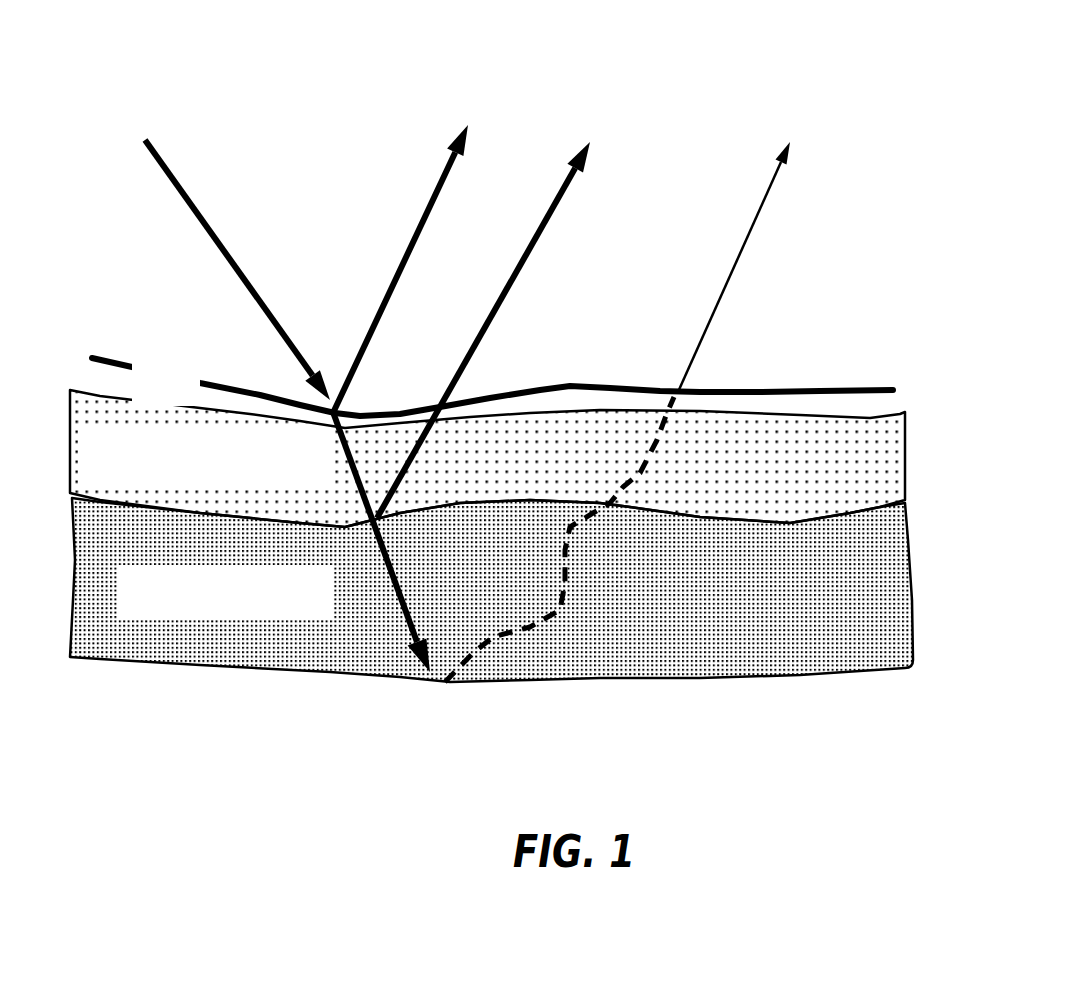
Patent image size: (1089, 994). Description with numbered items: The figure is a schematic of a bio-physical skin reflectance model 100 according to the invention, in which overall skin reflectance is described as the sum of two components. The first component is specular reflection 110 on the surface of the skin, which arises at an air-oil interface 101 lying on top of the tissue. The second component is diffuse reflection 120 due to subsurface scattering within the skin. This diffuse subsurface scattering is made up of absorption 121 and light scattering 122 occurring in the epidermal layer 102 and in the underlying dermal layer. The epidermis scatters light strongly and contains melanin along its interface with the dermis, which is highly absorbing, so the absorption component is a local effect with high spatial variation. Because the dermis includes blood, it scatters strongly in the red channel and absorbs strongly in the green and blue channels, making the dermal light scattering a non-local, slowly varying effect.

The skin tissue sample with oil layer 100 is at (551, 473).
The air-oil interface 101 is at (893, 392).
The epidermal layer 102 is at (898, 497).
The specular reflection 110 is at (483, 107).
The diffuse reflection 120 is at (608, 349).
The absorption 121 is at (560, 205).
The light scattering 122 is at (743, 240).